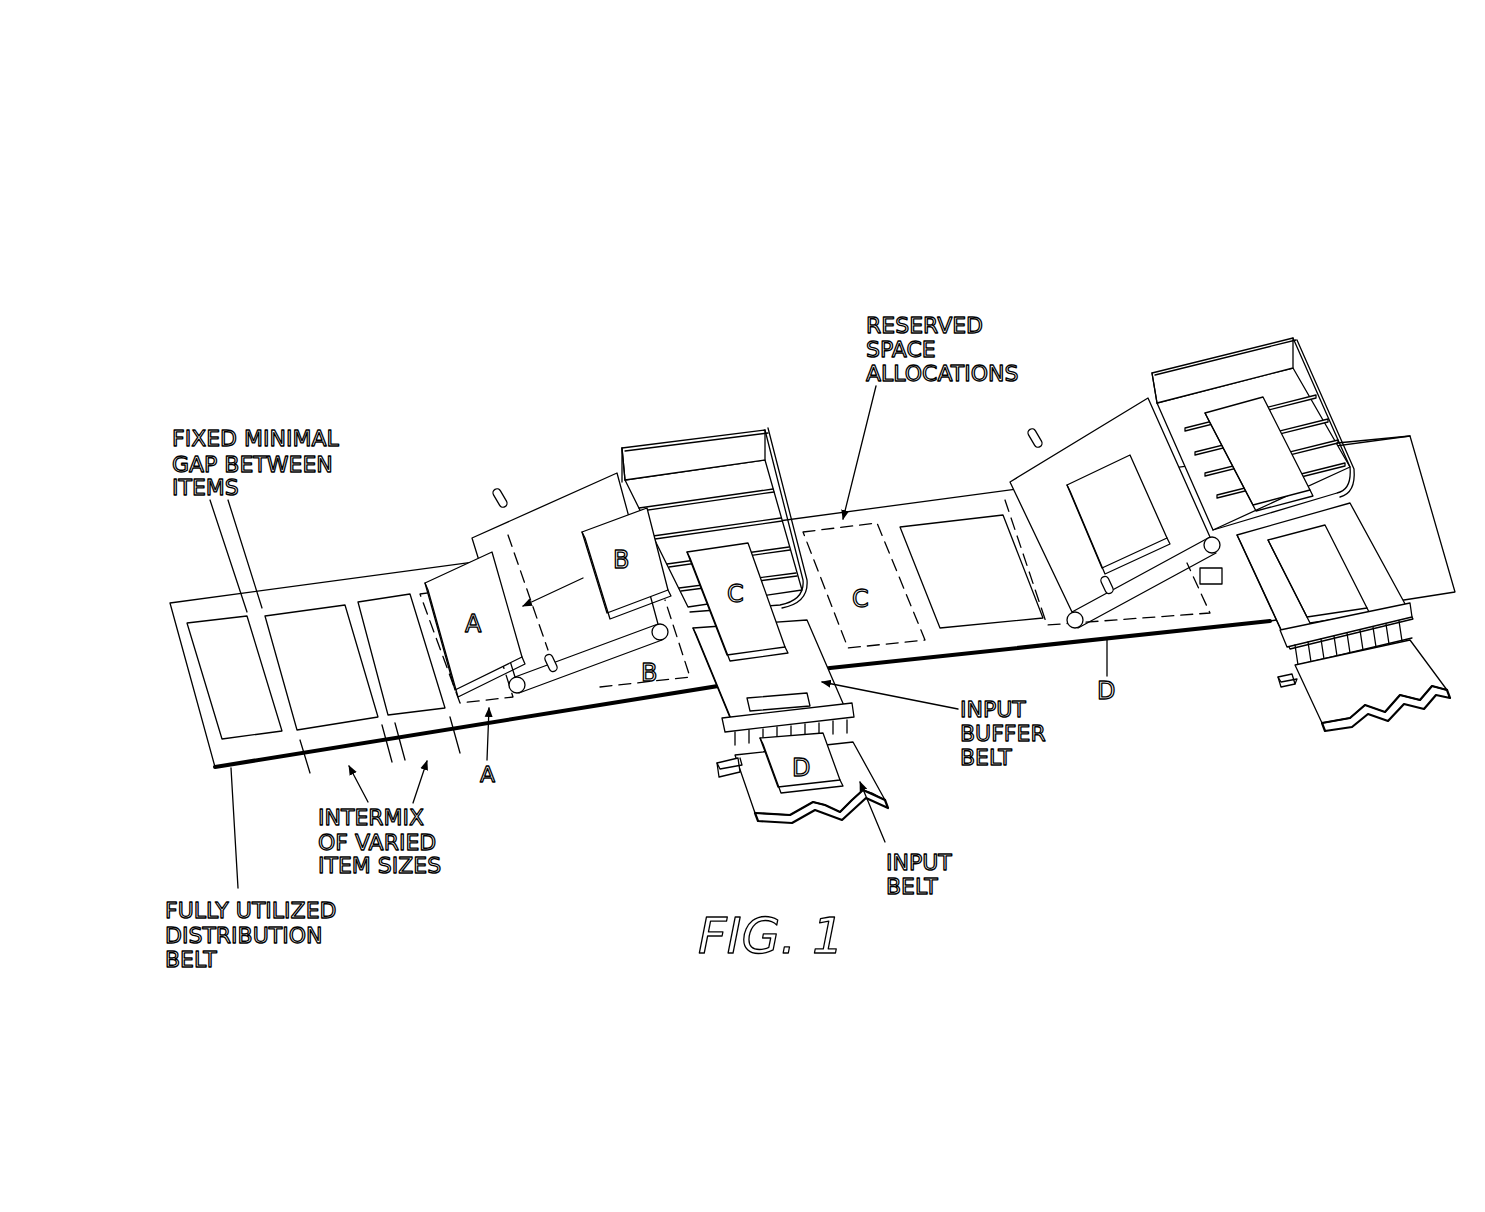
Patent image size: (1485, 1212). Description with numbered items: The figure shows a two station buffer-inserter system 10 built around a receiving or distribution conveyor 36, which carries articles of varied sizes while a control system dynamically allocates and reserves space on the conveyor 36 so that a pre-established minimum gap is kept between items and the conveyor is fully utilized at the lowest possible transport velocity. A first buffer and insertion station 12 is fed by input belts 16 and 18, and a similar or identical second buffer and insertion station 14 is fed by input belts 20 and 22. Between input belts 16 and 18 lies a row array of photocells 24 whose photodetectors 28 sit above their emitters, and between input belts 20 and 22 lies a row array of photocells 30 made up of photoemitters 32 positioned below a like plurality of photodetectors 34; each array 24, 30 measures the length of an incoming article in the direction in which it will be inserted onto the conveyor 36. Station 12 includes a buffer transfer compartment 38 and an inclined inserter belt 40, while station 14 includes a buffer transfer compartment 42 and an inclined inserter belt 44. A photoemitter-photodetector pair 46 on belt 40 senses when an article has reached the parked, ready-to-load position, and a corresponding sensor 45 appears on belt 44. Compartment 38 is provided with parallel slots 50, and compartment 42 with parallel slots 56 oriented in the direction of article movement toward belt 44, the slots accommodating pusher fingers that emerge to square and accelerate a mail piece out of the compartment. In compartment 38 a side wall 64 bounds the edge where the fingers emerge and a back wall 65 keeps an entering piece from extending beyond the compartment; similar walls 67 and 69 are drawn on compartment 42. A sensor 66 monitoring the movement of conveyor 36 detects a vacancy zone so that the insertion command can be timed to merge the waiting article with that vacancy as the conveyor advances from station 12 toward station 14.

The buffer-inserter system 10 is at (1190, 290).
The first buffer and insertion station 12 is at (1186, 745).
The second buffer and insertion station 14 is at (526, 866).
The input belt 16 is at (1340, 729).
The input belt 18 is at (1379, 553).
The input belt 20 is at (870, 767).
The input belt 22 is at (712, 710).
The row array of photocells 24 is at (1413, 610).
The photodetectors 28 is at (1387, 612).
The row array of photocells 30 is at (724, 752).
The photoemitters 32 is at (718, 779).
The photodetectors 34 is at (845, 708).
The receiving conveyor 36 is at (1239, 624).
The buffer transfer compartment 38 is at (1273, 415).
The inclined inserter belt 40 is at (1115, 446).
The buffer transfer compartment 42 is at (758, 492).
The inclined inserter belt 44 is at (563, 516).
The sensor 45 is at (495, 492).
The photoemitter-photodetector pair 46 is at (1029, 432).
The parallel slots 50 is at (1330, 452).
The parallel slots 56 is at (796, 548).
The side wall 64 is at (1347, 487).
The back wall 65 is at (1153, 372).
The sensor 66 is at (1211, 588).
The tray floor edge 67 is at (797, 593).
The tray wall 69 is at (622, 447).